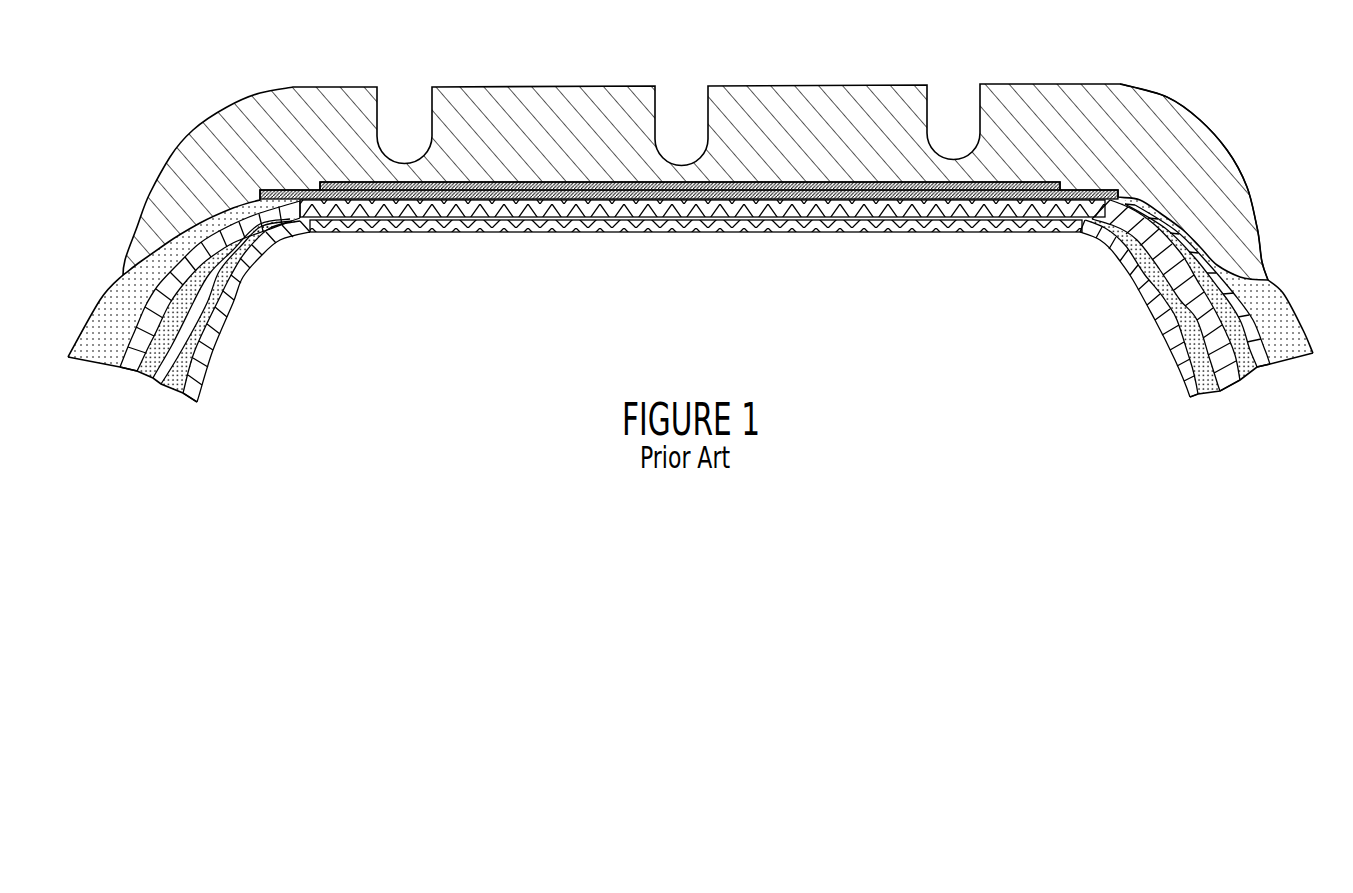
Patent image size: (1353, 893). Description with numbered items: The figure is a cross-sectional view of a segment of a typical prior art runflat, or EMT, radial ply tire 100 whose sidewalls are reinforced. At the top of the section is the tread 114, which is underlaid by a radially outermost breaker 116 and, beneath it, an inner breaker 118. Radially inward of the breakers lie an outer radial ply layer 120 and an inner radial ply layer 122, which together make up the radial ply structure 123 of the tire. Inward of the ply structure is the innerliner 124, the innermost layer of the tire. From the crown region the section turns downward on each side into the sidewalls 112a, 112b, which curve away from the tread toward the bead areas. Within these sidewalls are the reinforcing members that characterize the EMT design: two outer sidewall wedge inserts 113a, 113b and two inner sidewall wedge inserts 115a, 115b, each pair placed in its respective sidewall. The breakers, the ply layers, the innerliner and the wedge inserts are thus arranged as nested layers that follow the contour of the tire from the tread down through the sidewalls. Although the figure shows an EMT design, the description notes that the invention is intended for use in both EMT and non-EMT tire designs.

The radial ply tire 100 is at (667, 62).
The tread 114 is at (775, 110).
The radially outermost breaker 116 is at (1003, 117).
The radial ply structure 123 is at (1071, 188).
The inner breaker 118 is at (1152, 196).
The outer radial ply layer 120 is at (1187, 237).
The inner radial ply layer 122 is at (1260, 257).
The innerliner 124 is at (673, 231).
The sidewall 112a is at (1281, 303).
The sidewall 112b is at (117, 310).
The outer sidewall wedge insert 113a is at (1253, 377).
The outer sidewall wedge insert 113b is at (137, 368).
The inner sidewall wedge insert 115a is at (1220, 393).
The inner sidewall wedge insert 115b is at (163, 387).